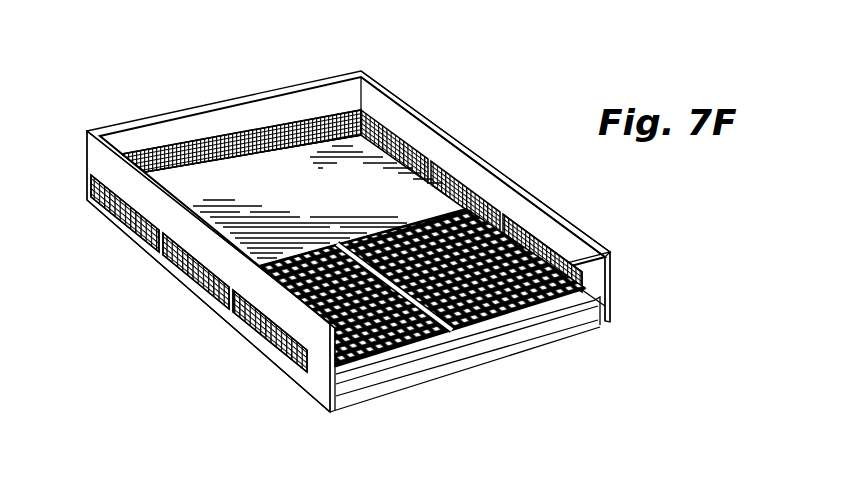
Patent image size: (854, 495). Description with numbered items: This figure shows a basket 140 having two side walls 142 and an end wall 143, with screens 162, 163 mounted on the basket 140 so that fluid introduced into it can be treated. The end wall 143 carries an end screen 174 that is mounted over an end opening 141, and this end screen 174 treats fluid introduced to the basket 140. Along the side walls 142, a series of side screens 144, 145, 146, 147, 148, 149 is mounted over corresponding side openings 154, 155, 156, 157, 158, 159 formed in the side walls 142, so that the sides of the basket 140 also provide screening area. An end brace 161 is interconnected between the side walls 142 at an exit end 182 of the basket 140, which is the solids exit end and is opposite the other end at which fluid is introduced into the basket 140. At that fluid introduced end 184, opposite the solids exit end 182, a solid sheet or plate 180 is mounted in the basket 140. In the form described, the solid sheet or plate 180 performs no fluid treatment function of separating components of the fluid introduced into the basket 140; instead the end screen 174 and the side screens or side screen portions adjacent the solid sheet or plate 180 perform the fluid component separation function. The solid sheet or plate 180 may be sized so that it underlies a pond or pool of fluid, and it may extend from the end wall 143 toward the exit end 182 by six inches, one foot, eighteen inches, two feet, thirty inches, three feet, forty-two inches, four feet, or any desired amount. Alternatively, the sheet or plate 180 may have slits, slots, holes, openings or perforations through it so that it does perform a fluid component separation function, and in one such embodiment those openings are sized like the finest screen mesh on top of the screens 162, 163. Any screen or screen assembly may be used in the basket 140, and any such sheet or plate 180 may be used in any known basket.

The basket 140 is at (217, 326).
The end opening 141 is at (309, 193).
The side walls 142 is at (591, 265).
The end wall 143 is at (137, 133).
The side screen 144 is at (165, 232).
The side screen 145 is at (187, 265).
The side screen 146 is at (280, 350).
The side screen 147 is at (384, 137).
The side screen 148 is at (458, 197).
The side screen 149 is at (556, 220).
The side opening 154 is at (128, 213).
The side opening 155 is at (212, 298).
The side opening 156 is at (248, 328).
The side opening 157 is at (414, 137).
The side opening 158 is at (480, 208).
The side opening 159 is at (566, 258).
The end brace 161 is at (512, 337).
The screen 162 is at (388, 338).
The screen 163 is at (483, 293).
The end screen 174 is at (192, 157).
The solid sheet or plate 180 is at (298, 138).
The exit end 182 is at (566, 326).
The fluid introduced end 184 is at (188, 177).